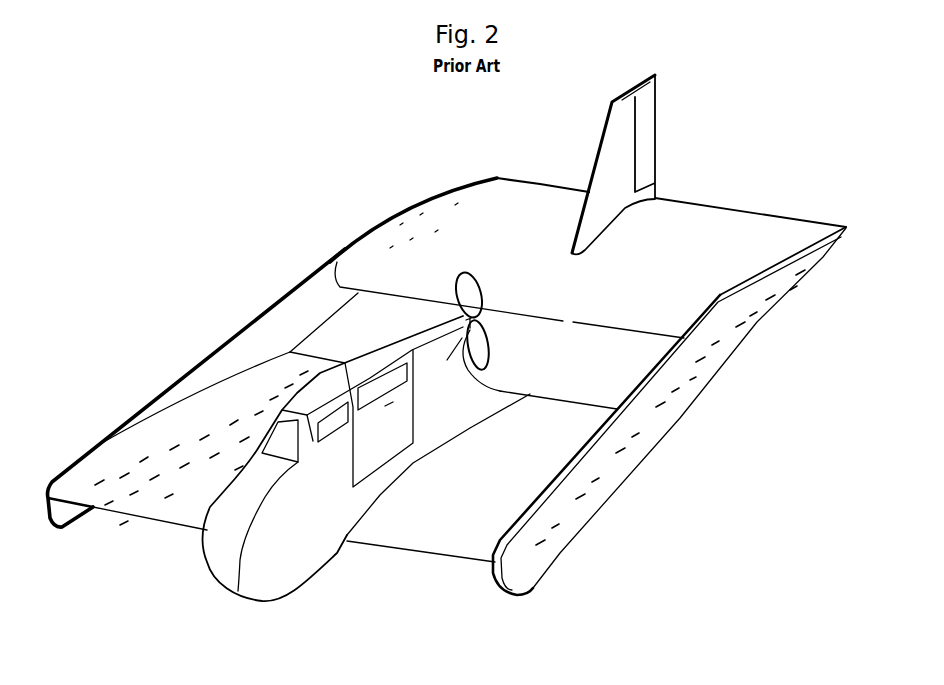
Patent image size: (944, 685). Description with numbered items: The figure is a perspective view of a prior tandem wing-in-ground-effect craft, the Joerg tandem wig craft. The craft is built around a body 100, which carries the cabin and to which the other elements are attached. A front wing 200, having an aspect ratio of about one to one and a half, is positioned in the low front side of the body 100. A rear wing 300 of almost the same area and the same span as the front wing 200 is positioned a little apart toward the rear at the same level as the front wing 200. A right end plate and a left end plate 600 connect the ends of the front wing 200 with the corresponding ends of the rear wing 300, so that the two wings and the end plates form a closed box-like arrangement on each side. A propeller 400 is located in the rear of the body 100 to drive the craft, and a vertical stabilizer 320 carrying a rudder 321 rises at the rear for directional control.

The body 100 is at (288, 530).
The front wing 200 is at (455, 520).
The rear wing 300 is at (692, 237).
The vertical stabilizer 320 is at (612, 167).
The rudder 321 is at (643, 143).
The propeller 400 is at (475, 288).
The end plate 600 is at (292, 303).